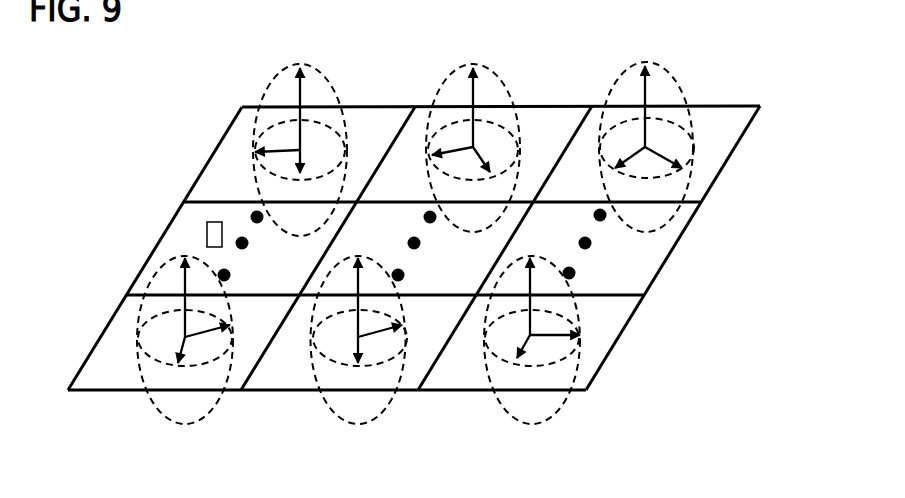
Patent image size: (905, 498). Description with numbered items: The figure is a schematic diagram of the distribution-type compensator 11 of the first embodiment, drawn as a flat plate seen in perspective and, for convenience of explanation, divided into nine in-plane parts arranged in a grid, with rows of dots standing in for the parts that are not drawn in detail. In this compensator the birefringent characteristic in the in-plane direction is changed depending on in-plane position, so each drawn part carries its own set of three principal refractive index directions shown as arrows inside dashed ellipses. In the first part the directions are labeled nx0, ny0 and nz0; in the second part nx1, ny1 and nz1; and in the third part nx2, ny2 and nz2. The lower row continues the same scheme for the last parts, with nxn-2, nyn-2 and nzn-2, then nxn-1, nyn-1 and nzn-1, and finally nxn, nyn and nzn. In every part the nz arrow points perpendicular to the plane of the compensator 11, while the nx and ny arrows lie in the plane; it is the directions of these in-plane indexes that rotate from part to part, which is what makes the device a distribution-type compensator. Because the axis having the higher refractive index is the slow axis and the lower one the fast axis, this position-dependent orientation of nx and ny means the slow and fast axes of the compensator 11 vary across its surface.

The distribution-type compensator 11 is at (85, 392).
The principal refractive index nx at first in-plane part nx0 is at (258, 156).
The principal refractive index ny at first in-plane part ny0 is at (321, 158).
The principal refractive index nz at first in-plane part nz0 is at (300, 94).
The principal refractive index nx at second in-plane part nx1 is at (431, 160).
The principal refractive index ny at second in-plane part ny1 is at (495, 155).
The principal refractive index nz at second in-plane part nz1 is at (468, 92).
The principal refractive index nx at third in-plane part nx2 is at (604, 169).
The principal refractive index ny at third in-plane part ny2 is at (686, 152).
The principal refractive index nz at third in-plane part nz2 is at (646, 92).
The principal refractive index nx at in-plane part n-2 nxn-2 is at (182, 364).
The principal refractive index ny at in-plane part n-2 nyn-2 is at (233, 319).
The principal refractive index nz at in-plane part n-2 nzn-2 is at (171, 284).
The principal refractive index nx at in-plane part n-1 nxn-1 is at (363, 364).
The principal refractive index ny at in-plane part n-1 nyn-1 is at (405, 320).
The principal refractive index nz at in-plane part n-1 nzn-1 is at (368, 284).
The principal refractive index nx at last in-plane part nxn is at (515, 362).
The principal refractive index ny at last in-plane part nyn is at (571, 333).
The principal refractive index nz at last in-plane part nzn is at (530, 283).